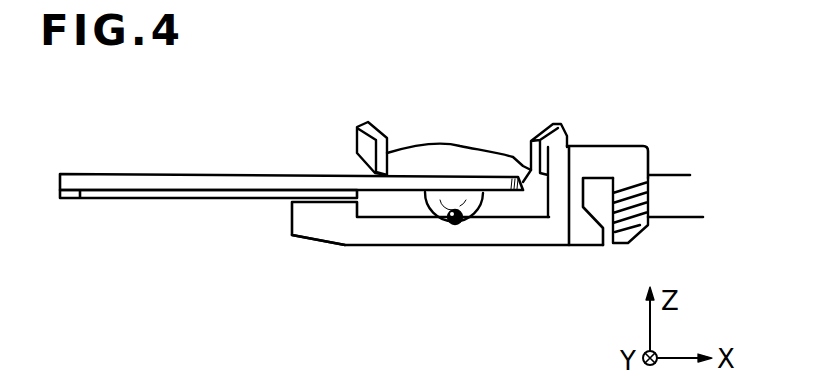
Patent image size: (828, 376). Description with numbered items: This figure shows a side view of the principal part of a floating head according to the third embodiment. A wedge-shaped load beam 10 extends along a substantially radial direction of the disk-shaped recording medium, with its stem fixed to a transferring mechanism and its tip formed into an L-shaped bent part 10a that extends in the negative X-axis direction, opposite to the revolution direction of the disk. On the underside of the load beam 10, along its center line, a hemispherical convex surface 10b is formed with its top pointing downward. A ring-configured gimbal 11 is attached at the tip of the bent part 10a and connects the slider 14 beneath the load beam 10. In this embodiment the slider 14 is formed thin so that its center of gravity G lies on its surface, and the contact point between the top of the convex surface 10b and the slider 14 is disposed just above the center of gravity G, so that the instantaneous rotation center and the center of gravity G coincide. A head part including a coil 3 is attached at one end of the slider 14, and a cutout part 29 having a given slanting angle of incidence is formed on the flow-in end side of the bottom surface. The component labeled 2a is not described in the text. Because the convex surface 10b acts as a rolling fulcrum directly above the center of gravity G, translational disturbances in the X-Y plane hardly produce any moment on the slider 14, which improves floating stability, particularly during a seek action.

The bent part 10a is at (203, 180).
The gimbal 11 is at (174, 199).
The load beam 10 is at (425, 160).
The convex surface 10b is at (487, 207).
The center of gravity G is at (450, 222).
The slider 14 is at (377, 232).
The cutout part 29 is at (308, 244).
The coil 3 is at (640, 172).
The terminal 2a is at (637, 234).